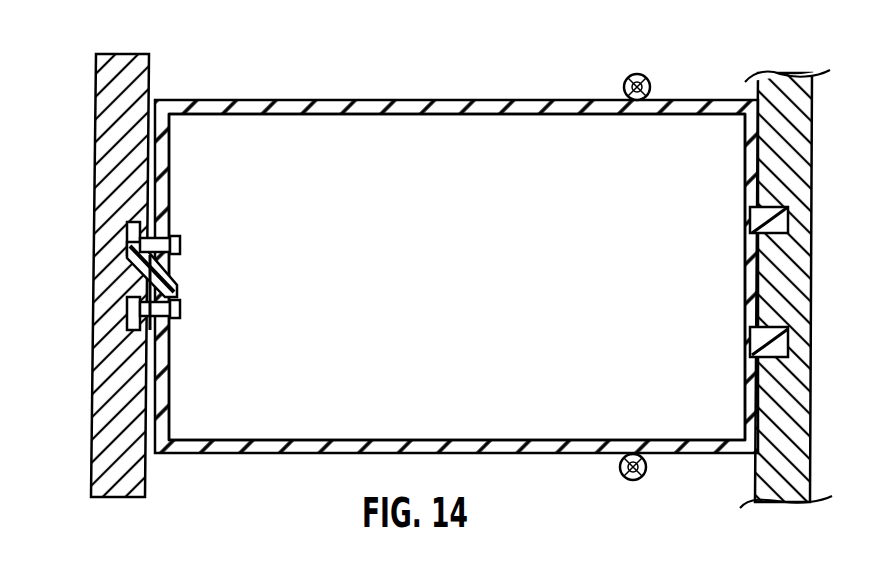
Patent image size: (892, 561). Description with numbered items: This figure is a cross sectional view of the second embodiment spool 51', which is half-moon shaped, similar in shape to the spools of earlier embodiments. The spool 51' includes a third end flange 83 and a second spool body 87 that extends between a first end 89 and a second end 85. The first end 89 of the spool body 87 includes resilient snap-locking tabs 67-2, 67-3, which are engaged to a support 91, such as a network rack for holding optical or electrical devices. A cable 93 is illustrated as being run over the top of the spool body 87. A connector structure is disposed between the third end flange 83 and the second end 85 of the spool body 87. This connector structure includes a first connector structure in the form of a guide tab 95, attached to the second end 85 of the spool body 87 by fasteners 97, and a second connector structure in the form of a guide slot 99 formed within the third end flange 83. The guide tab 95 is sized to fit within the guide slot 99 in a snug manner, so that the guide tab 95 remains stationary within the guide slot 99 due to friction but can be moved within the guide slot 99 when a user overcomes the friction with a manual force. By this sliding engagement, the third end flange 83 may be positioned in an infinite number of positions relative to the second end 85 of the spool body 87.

The spool 51' is at (456, 234).
The third end flange 83 is at (110, 106).
The second end 85 is at (172, 172).
The second spool body 87 is at (400, 114).
The first end 89 is at (745, 272).
The support 91 is at (770, 92).
The cable 93 is at (626, 82).
The guide tab 95 is at (143, 313).
The fasteners 97 is at (182, 245).
The guide slot 99 is at (124, 238).
The resilient snap-locking tab 67-2 is at (750, 345).
The resilient snap-locking tab 67-3 is at (745, 220).